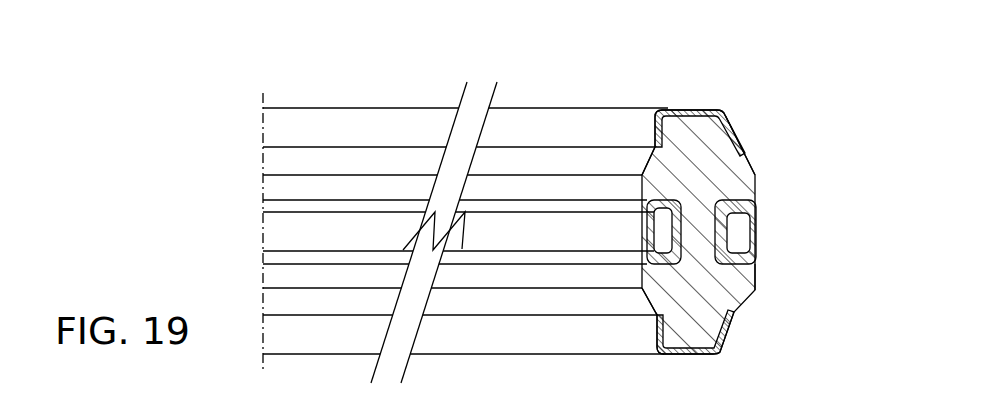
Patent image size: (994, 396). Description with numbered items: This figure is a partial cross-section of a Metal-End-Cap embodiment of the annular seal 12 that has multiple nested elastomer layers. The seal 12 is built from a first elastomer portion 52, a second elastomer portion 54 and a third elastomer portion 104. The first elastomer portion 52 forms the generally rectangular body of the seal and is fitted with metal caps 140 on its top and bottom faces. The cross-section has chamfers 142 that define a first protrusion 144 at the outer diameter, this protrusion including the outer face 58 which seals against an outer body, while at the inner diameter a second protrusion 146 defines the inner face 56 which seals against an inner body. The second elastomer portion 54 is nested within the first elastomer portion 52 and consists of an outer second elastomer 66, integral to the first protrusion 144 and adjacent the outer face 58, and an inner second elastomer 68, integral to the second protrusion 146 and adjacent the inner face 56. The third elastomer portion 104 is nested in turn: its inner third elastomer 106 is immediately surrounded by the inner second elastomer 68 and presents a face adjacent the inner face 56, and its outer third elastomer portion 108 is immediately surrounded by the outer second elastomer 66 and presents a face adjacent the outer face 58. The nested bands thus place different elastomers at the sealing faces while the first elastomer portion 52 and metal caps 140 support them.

The seal 12 is at (686, 190).
The first elastomer portion 52 is at (755, 188).
The second elastomer portion 54 is at (686, 149).
The inner face 56 is at (640, 276).
The outer face 58 is at (755, 273).
The outer second elastomer 66 is at (757, 205).
The inner second elastomer 68 is at (648, 207).
The third elastomer portion 104 is at (690, 234).
The inner third elastomer 106 is at (650, 230).
The outer third elastomer portion 108 is at (755, 243).
The metal caps 140 is at (741, 225).
The chamfers 142 is at (745, 152).
The first protrusion 144 is at (758, 170).
The second protrusion 146 is at (643, 168).